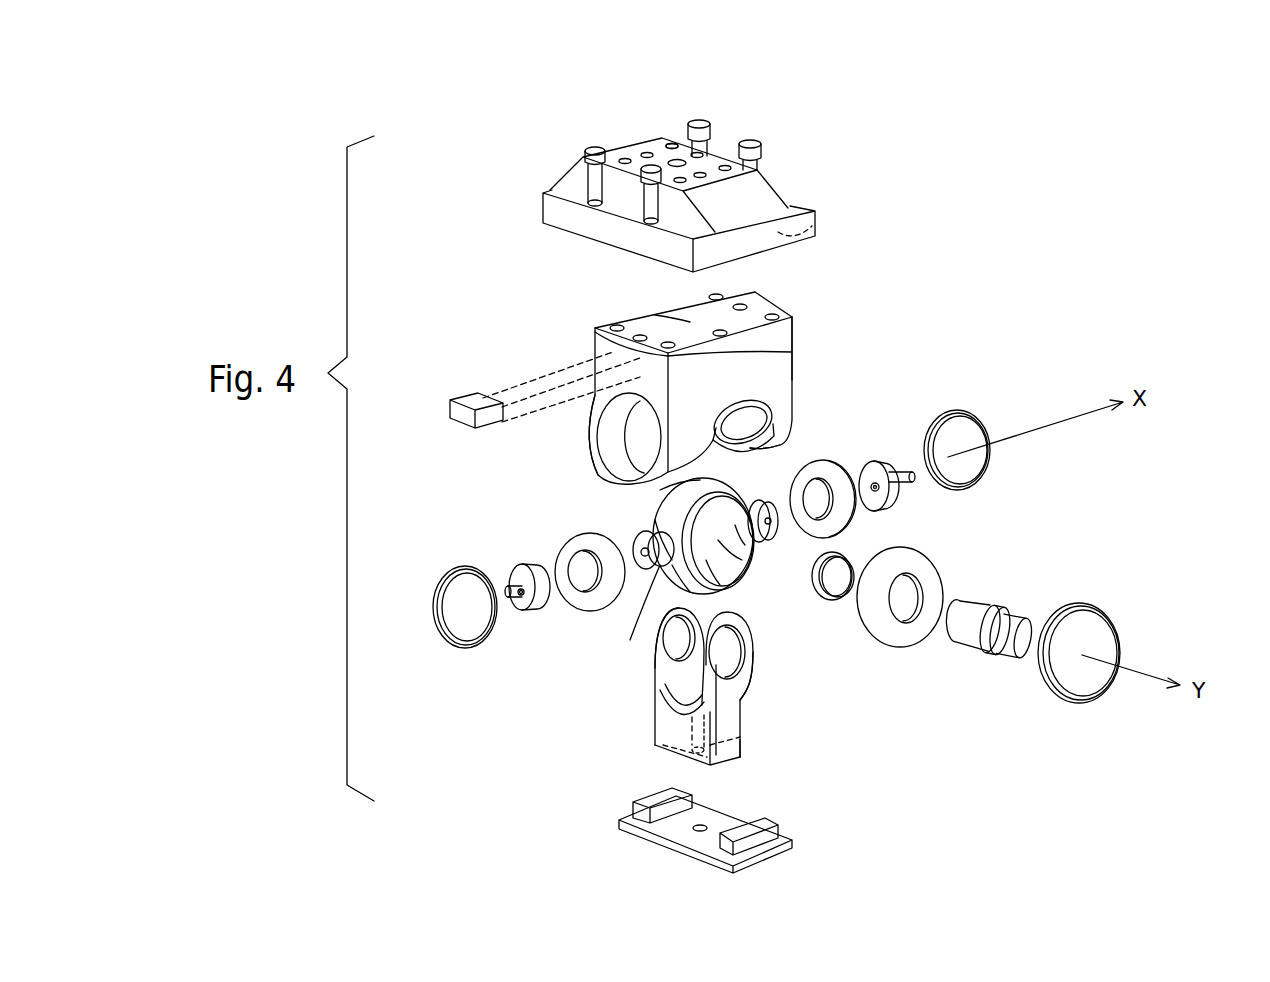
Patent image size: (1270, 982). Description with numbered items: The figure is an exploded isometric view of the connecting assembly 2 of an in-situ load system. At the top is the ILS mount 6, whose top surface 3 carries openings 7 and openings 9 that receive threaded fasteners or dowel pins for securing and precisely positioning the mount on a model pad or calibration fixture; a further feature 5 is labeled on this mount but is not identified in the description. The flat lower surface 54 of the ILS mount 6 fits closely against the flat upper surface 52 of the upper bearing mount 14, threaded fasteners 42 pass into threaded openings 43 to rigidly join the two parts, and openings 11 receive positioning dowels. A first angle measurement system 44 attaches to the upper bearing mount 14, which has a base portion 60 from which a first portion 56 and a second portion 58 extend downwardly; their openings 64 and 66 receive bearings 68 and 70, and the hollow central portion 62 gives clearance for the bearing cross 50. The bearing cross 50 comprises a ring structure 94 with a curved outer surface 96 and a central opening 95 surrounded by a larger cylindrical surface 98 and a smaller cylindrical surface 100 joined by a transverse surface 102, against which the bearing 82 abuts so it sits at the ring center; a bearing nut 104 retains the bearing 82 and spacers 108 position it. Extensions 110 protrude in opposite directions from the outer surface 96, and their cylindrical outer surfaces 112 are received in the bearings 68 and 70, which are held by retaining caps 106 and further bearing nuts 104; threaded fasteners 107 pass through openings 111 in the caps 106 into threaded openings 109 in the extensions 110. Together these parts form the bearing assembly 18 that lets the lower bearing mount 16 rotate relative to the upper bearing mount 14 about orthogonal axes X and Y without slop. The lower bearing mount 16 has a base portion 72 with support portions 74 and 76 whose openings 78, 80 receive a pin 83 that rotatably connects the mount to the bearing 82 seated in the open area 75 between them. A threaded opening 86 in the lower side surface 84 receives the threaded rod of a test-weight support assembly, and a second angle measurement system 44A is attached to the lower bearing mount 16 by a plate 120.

The connecting assembly 2 is at (916, 320).
The top surface 3 is at (603, 158).
The fastener hole 5 is at (680, 140).
The ILS mount 6 is at (543, 205).
The openings 7 is at (647, 152).
The openings 9 is at (670, 145).
The openings 11 is at (742, 307).
The upper bearing mount 14 is at (592, 350).
The lower bearing mount 16 is at (655, 735).
The bearing assembly 18 is at (864, 423).
The threaded fasteners 42 is at (590, 150).
The threaded openings 43 is at (774, 316).
The first angle measurement system 44 is at (466, 402).
The second angle measurement system 44A is at (635, 805).
The bearing cross 50 is at (668, 505).
The flat upper surface 52 is at (688, 320).
The flat lower surface 54 is at (800, 235).
The first downwardly extending portion 56 is at (592, 455).
The second downwardly extending portion 58 is at (790, 446).
The base portion 60 is at (794, 330).
The central portion 62 is at (735, 432).
The opening 64 is at (630, 432).
The opening 66 is at (756, 426).
The bearing 68 is at (580, 602).
The bearing 70 is at (855, 518).
The base portion 72 is at (745, 762).
The support portion 74 is at (660, 650).
The open area 75 is at (690, 690).
The support portion 76 is at (754, 658).
The opening 78 is at (673, 632).
The second arm hole 80 is at (745, 638).
The bearing 82 is at (940, 575).
The pin 83 is at (960, 642).
The lower side surface 84 is at (680, 750).
The threaded opening 86 is at (695, 760).
The ring structure 94 is at (670, 520).
The central opening 95 is at (690, 588).
The curved outer surface 96 is at (658, 516).
The cylindrical surface 98 is at (733, 553).
The cylindrical surface 100 is at (714, 560).
The transverse surface 102 is at (740, 535).
The bearing nut 104 is at (470, 650).
The retaining cap 106 is at (512, 570).
The threaded fastener 107 is at (510, 598).
The spacer 108 is at (835, 600).
The threaded opening 109 is at (646, 566).
The extension 110 is at (762, 500).
The opening 111 is at (530, 603).
The cylindrical outer surface 112 is at (770, 522).
The plate 120 is at (640, 840).